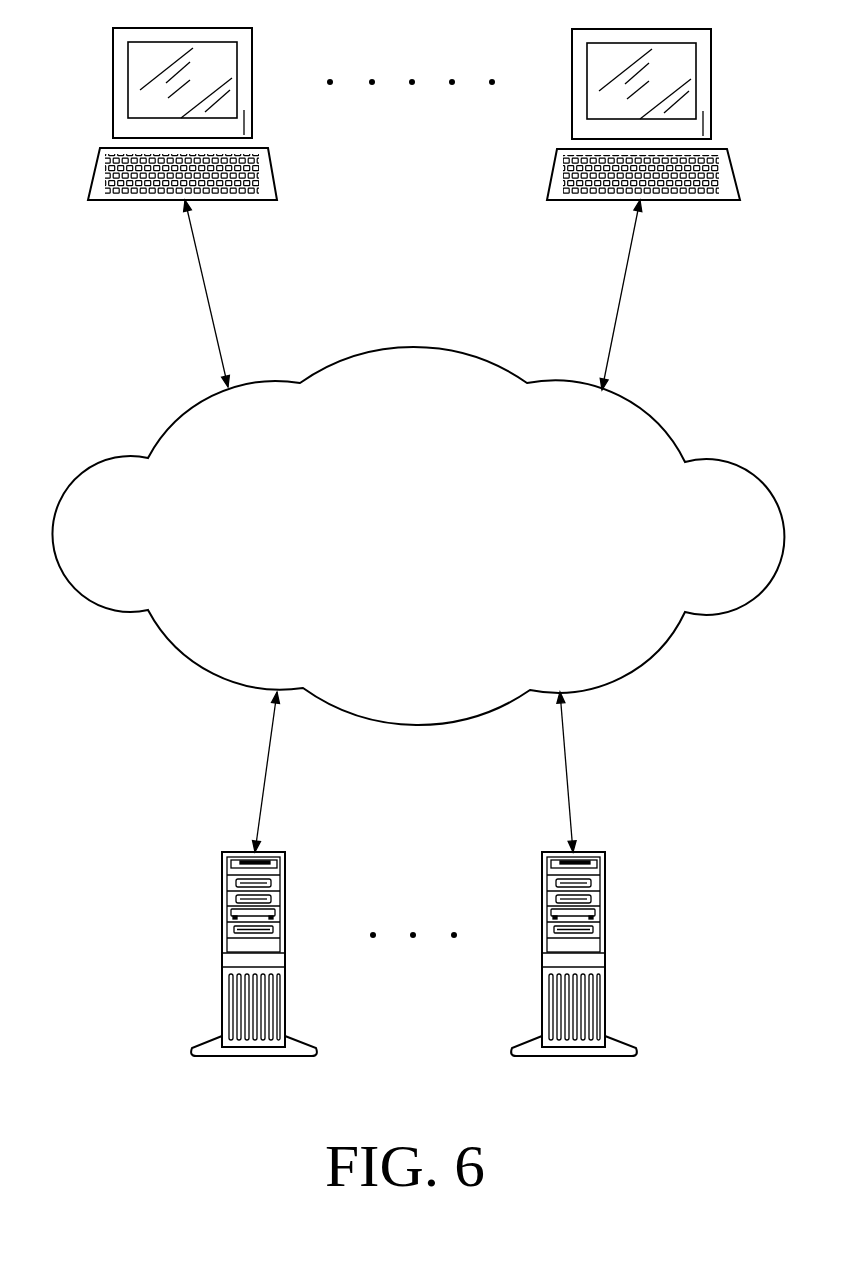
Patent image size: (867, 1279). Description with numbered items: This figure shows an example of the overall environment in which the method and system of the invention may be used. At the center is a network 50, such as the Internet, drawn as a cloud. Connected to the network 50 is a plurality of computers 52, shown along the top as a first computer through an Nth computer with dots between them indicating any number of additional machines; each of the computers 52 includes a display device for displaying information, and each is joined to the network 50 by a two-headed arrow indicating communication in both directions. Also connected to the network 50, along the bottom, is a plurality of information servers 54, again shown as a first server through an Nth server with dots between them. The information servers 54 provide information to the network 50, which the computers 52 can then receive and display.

The network 50 is at (111, 692).
The plurality of computers 52 is at (548, 175).
The plurality of information servers 54 is at (542, 992).